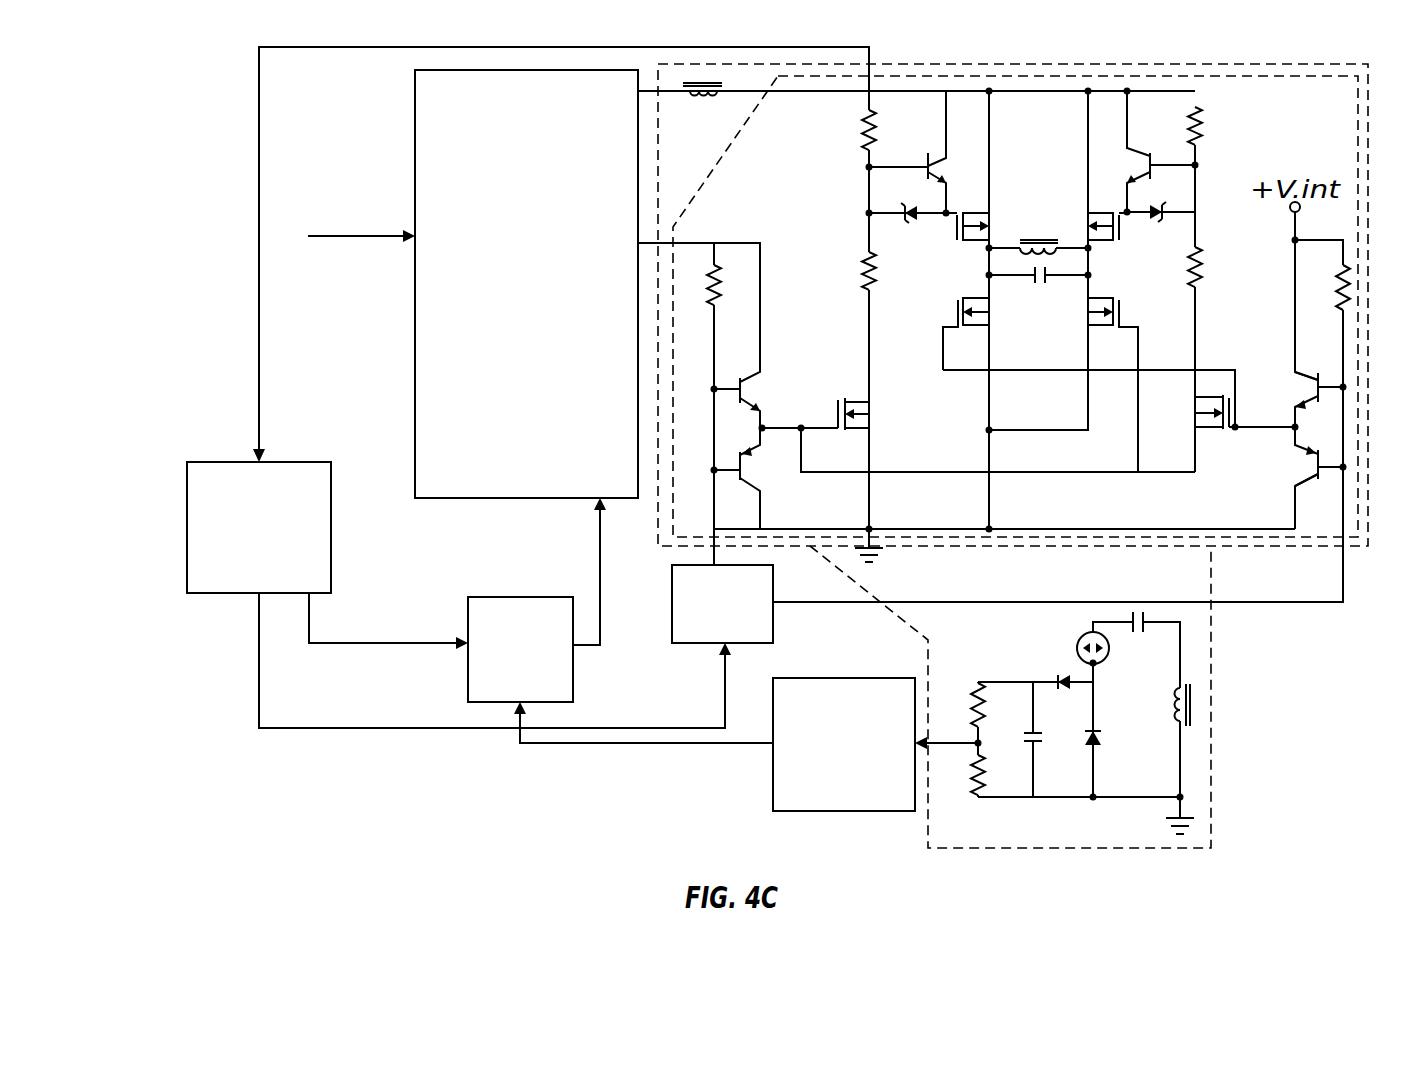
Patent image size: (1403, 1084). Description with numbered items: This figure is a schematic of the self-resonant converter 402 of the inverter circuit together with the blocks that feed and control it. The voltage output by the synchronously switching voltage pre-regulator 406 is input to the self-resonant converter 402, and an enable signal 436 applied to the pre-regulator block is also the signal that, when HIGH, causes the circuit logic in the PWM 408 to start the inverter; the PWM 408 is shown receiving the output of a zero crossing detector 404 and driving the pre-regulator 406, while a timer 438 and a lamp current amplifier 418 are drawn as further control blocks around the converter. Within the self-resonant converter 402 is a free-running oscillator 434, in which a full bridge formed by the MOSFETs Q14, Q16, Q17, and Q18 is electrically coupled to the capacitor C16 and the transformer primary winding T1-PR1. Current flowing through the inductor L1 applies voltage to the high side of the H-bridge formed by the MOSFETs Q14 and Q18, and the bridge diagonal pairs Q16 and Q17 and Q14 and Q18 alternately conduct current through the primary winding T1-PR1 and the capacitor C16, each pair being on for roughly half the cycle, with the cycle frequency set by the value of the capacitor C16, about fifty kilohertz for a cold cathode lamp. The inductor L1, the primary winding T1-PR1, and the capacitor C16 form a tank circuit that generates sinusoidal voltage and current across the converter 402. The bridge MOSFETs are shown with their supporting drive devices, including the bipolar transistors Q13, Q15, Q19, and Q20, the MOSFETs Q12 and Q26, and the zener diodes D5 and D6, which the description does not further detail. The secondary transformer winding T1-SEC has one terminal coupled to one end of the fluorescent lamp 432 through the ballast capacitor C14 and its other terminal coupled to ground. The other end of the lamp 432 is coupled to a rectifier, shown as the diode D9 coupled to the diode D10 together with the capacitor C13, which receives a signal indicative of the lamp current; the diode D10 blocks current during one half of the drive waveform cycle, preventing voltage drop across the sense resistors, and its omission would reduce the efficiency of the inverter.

The self-resonant converter 402 is at (1018, 64).
The zero crossing detector 404 is at (297, 462).
The synchronously switching voltage pre-regulator 406 is at (415, 142).
The PWM 408 is at (490, 597).
The lamp current amplifier 418 is at (835, 678).
The fluorescent lamp 432 is at (1078, 638).
The free-running oscillator 434 is at (1013, 538).
The enable signal 436 is at (312, 237).
The timer 438 is at (700, 648).
The inductor L1 is at (702, 111).
The transistor Q12 is at (842, 414).
The transistor Q13 is at (923, 152).
The MOSFET Q14 is at (993, 224).
The transistor Q15 is at (1144, 151).
The MOSFET Q16 is at (991, 333).
The MOSFET Q17 is at (1094, 384).
The MOSFET Q18 is at (1091, 224).
The transistor Q19 is at (1283, 387).
The transistor Q20 is at (1283, 472).
The transistor Q26 is at (1222, 412).
The zener diode D5 is at (907, 228).
The zener diode D6 is at (1161, 227).
The diode D9 is at (1067, 698).
The diode D10 is at (1118, 743).
The capacitor C13 is at (1037, 745).
The ballast capacitor C14 is at (1147, 636).
The capacitor C16 is at (1040, 287).
The transformer primary winding T1-PR1 is at (1052, 238).
The secondary transformer winding T1-SEC is at (1229, 705).